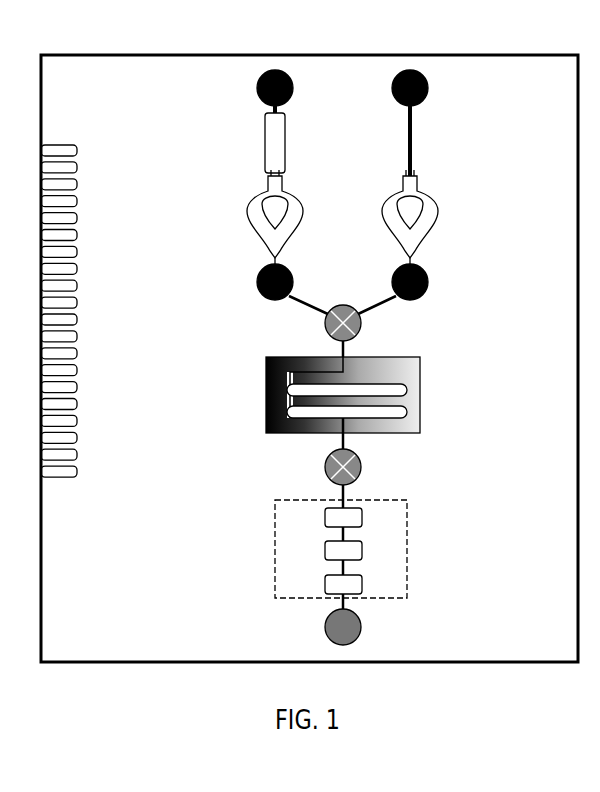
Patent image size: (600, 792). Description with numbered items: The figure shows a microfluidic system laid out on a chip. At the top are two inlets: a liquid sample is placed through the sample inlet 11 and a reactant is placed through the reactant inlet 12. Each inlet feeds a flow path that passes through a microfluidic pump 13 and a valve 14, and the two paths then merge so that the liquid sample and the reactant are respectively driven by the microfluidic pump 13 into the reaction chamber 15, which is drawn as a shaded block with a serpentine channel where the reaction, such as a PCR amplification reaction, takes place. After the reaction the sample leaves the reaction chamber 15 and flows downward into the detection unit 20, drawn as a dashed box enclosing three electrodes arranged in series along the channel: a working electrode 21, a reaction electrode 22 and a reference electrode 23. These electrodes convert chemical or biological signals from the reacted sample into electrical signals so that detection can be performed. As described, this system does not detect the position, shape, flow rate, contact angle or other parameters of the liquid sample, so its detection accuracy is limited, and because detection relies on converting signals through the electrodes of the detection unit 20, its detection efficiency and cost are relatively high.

The sample inlet 11 is at (275, 70).
The reactant inlet 12 is at (412, 70).
The microfluidic pump 13 is at (430, 212).
The valve 14 is at (423, 290).
The reaction chamber 15 is at (420, 412).
The detection unit 20 is at (366, 574).
The working electrode 21 is at (325, 552).
The reaction electrode 22 is at (325, 514).
The reference electrode 23 is at (325, 585).